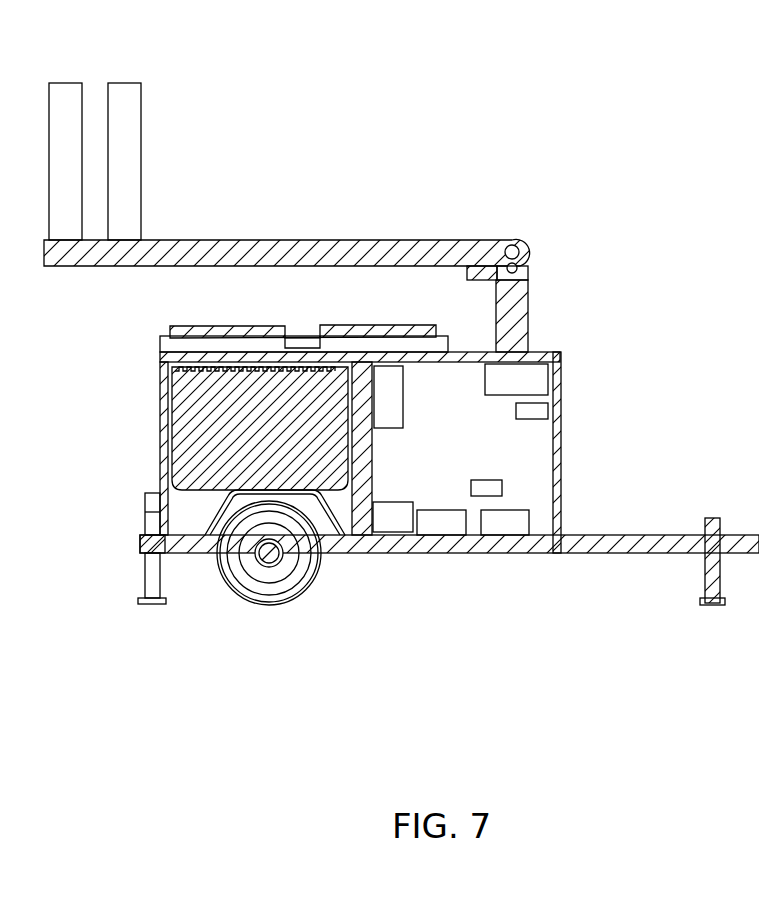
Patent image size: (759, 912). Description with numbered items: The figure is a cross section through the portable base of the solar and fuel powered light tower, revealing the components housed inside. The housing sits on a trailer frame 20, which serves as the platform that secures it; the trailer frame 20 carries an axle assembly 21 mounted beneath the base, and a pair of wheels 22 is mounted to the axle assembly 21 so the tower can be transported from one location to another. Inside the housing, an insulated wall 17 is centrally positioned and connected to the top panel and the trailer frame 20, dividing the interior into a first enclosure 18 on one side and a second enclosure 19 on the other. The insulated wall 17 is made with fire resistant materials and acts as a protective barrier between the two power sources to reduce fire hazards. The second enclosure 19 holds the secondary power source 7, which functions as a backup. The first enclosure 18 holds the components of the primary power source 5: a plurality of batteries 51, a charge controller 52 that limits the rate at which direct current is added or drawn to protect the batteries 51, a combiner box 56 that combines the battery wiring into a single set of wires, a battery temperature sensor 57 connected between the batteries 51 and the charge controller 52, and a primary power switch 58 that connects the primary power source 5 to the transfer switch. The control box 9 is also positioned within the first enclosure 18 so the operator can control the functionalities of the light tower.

The primary power source 5 is at (300, 312).
The secondary power source 7 is at (170, 410).
The control box 9 is at (545, 370).
The insulated wall 17 is at (372, 452).
The first enclosure 18 is at (550, 500).
The second enclosure 19 is at (191, 521).
The trailer frame 20 is at (390, 555).
The axle assembly 21 is at (280, 560).
The pair of wheels 22 is at (252, 600).
The plurality of batteries 51 is at (460, 547).
The charge controller 52 is at (403, 378).
The combiner box 56 is at (403, 502).
The battery temperature sensor 57 is at (545, 410).
The primary power switch 58 is at (487, 480).